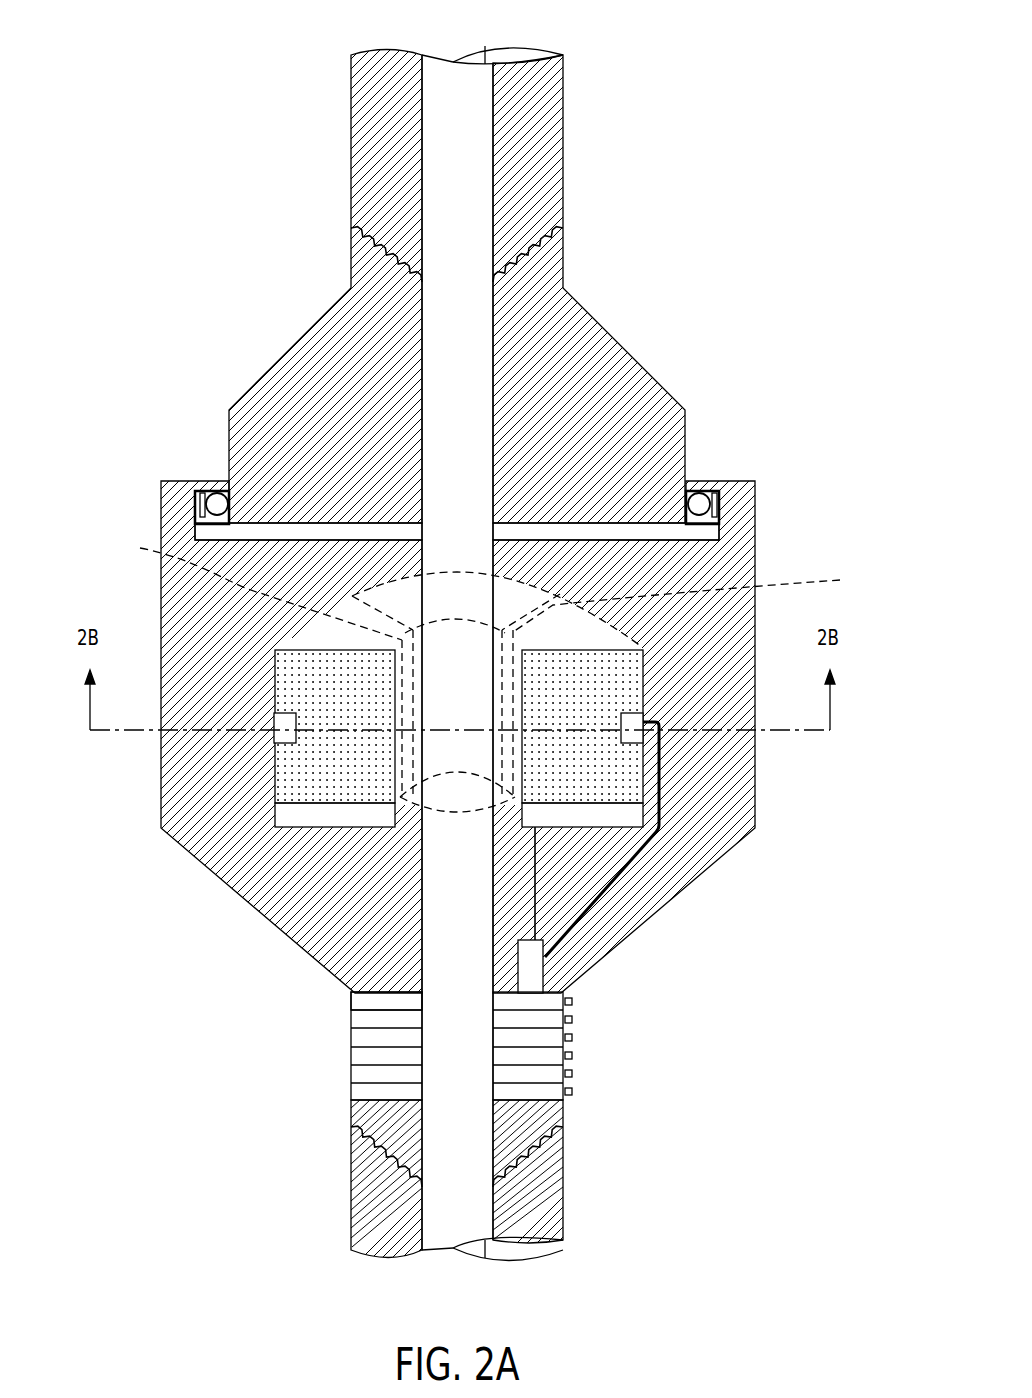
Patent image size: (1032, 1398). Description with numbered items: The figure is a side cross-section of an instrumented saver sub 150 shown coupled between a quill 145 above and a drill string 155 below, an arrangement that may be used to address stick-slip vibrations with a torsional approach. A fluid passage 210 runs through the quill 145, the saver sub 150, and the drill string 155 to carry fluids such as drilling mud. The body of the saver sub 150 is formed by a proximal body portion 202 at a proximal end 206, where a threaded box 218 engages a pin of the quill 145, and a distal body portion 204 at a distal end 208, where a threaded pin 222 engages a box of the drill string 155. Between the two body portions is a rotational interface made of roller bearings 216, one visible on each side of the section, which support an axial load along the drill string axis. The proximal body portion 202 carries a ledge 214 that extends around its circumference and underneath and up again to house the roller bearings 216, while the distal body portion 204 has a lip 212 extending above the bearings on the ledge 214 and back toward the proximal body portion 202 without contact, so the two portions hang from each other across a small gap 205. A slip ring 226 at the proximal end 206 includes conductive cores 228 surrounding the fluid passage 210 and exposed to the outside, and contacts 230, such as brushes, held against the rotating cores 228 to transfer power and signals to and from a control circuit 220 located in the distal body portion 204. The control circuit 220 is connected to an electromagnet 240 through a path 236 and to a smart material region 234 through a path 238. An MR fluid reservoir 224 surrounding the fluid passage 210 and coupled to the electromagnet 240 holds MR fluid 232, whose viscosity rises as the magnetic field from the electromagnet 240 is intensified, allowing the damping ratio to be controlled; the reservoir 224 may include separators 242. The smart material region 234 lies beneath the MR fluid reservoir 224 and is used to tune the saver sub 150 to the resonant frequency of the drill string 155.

The instrumented saver sub 150 is at (765, 130).
The quill 145 is at (351, 112).
The drill string 155 is at (360, 1232).
The proximal body portion 202 is at (303, 338).
The distal body portion 204 is at (755, 560).
The gap 205 is at (268, 533).
The proximal end 206 is at (640, 257).
The distal end 208 is at (697, 1122).
The fluid passage 210 is at (441, 62).
The lip 212 is at (718, 482).
The ledge 214 is at (718, 513).
The roller bearing 216 is at (700, 500).
The box 218 is at (352, 262).
The control circuit 220 is at (545, 962).
The pin 222 is at (548, 1115).
The MR fluid reservoir 224 is at (277, 643).
The slip ring 226 is at (348, 995).
The cores 228 is at (360, 1002).
The contacts 230 is at (573, 1055).
The MR fluid 232 is at (632, 708).
The smart material region 234 is at (288, 813).
The path 236 is at (658, 830).
The path 238 is at (535, 882).
The electromagnet 240 is at (280, 720).
The separators 242 is at (490, 674).